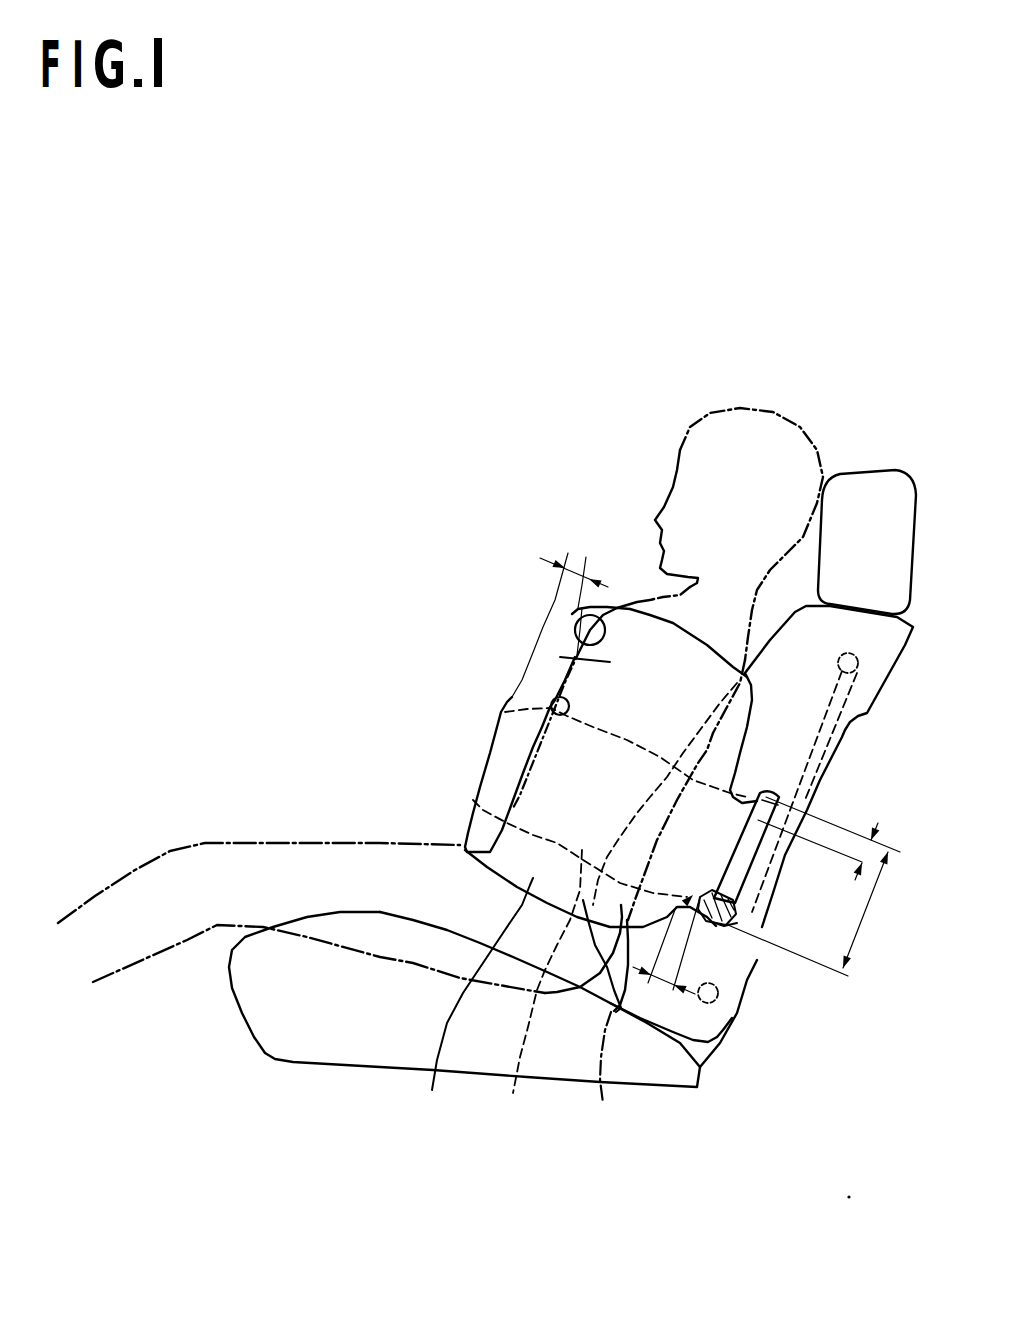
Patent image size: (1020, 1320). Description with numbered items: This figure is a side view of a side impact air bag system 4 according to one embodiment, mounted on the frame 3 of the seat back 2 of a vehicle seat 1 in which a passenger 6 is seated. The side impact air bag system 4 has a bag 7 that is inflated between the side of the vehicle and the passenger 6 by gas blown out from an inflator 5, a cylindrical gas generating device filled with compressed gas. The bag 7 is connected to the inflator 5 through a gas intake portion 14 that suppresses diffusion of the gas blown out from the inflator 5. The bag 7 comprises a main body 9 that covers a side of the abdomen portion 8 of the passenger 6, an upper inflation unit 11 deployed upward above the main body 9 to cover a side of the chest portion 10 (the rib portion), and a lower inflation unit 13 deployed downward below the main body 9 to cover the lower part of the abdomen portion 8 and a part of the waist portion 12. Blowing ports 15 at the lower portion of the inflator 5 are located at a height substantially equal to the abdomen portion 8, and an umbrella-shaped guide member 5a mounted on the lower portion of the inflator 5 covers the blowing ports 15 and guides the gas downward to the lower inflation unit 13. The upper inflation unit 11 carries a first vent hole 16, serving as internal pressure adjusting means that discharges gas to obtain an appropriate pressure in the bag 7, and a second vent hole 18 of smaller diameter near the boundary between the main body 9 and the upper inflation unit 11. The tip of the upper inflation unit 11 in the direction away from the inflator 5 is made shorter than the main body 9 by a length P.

The vehicle seat 1 is at (747, 1070).
The seat back 2 is at (857, 713).
The frame 3 is at (797, 828).
The side impact air bag system 4 is at (717, 955).
The inflator 5 is at (760, 793).
The guide member 5a is at (774, 937).
The passenger 6 is at (440, 683).
The bag 7 is at (453, 787).
The abdomen portion 8 is at (541, 850).
The main body 9 is at (547, 757).
The chest portion 10 is at (537, 636).
The upper inflation unit 11 is at (647, 630).
The waist portion 12 is at (609, 1074).
The lower inflation unit 13 is at (476, 1002).
The gas intake portion 14 is at (697, 917).
The blowing ports 15 is at (767, 901).
The first vent hole 16 is at (572, 614).
The second vent hole 18 is at (551, 704).